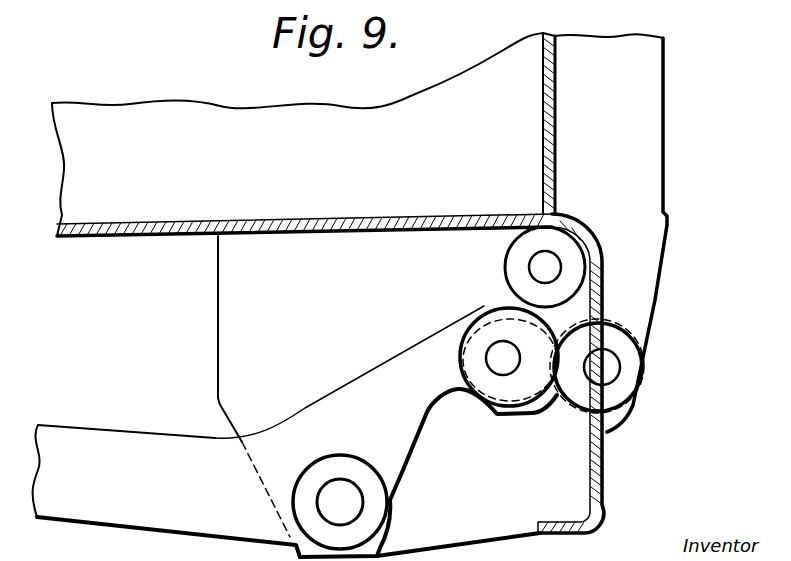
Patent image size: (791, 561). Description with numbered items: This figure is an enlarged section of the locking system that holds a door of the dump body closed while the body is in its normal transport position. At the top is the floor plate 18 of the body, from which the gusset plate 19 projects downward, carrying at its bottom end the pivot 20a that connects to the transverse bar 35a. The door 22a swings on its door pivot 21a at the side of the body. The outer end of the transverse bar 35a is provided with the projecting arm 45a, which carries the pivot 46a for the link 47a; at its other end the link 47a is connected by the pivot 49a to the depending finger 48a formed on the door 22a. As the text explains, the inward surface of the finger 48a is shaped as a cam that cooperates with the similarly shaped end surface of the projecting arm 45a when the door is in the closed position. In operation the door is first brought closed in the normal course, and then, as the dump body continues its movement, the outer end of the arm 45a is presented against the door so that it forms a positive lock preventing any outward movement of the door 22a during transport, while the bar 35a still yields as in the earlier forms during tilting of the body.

The floor plate 18 is at (110, 207).
The gusset plate 19 is at (254, 386).
The pivot 20a is at (347, 502).
The door pivot 21a is at (543, 265).
The door 22a is at (600, 283).
The transverse bar 35a is at (166, 491).
The projecting arm 45a is at (390, 372).
The pivot 46a is at (499, 366).
The link 47a is at (556, 397).
The depending finger 48a is at (630, 289).
The pivot 49a is at (607, 367).